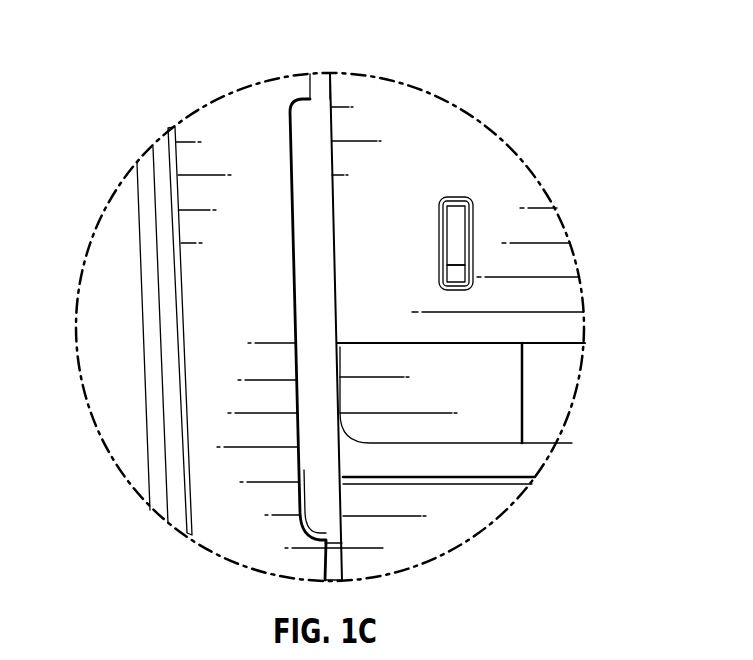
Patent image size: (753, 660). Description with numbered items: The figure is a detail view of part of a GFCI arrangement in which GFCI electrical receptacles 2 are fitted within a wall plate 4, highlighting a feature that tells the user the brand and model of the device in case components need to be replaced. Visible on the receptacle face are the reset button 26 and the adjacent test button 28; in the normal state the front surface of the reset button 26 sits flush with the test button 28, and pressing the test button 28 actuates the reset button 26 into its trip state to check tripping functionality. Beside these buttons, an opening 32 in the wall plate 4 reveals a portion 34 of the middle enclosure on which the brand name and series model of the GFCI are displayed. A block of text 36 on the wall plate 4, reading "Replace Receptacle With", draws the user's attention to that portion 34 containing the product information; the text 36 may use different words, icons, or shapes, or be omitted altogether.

The GFCI electrical receptacle 2 is at (430, 110).
The wall plate 4 is at (108, 407).
The reset button 26 is at (364, 362).
The test button 28 is at (573, 357).
The opening 32 is at (276, 103).
The portion of the middle enclosure 34 is at (316, 118).
The block of text 36 is at (210, 297).